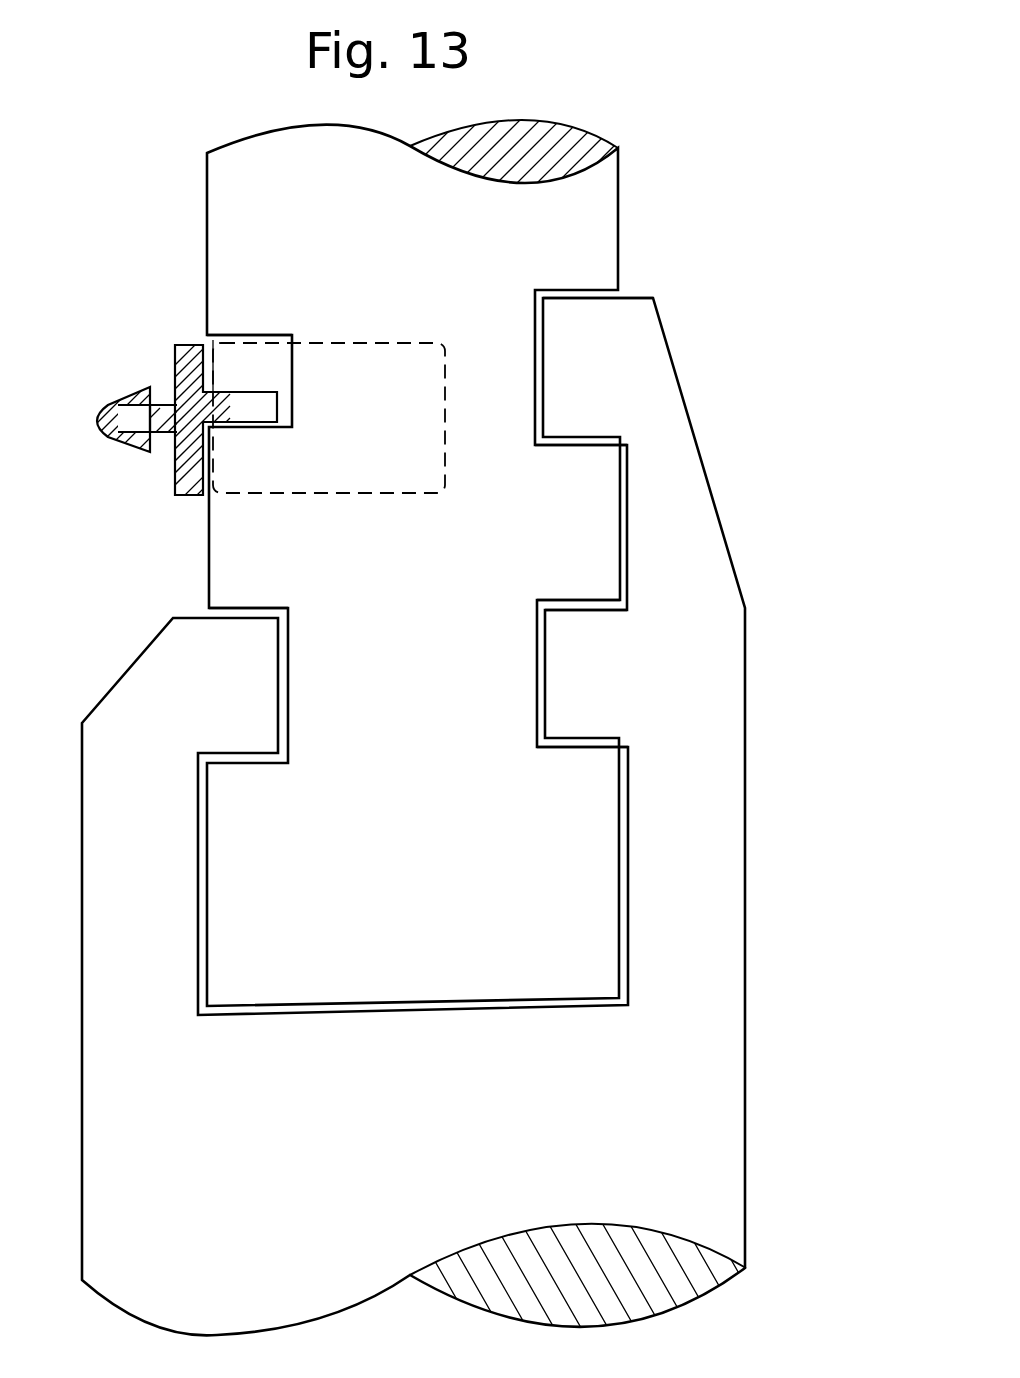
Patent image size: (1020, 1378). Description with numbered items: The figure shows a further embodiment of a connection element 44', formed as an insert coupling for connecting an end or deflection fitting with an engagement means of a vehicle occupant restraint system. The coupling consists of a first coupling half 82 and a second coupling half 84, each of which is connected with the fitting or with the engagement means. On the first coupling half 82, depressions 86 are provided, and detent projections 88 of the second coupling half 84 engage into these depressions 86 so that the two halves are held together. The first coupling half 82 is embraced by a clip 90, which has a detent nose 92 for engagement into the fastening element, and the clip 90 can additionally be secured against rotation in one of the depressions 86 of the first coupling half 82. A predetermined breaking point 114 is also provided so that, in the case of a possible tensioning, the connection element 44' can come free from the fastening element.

The connection element 44' is at (759, 265).
The first coupling half 82 is at (590, 216).
The second coupling half 84 is at (700, 1107).
The depressions 86 is at (258, 333).
The detent projections 88 is at (578, 382).
The clip 90 is at (350, 480).
The detent nose 92 is at (103, 410).
The predetermined breaking point 114 is at (161, 400).